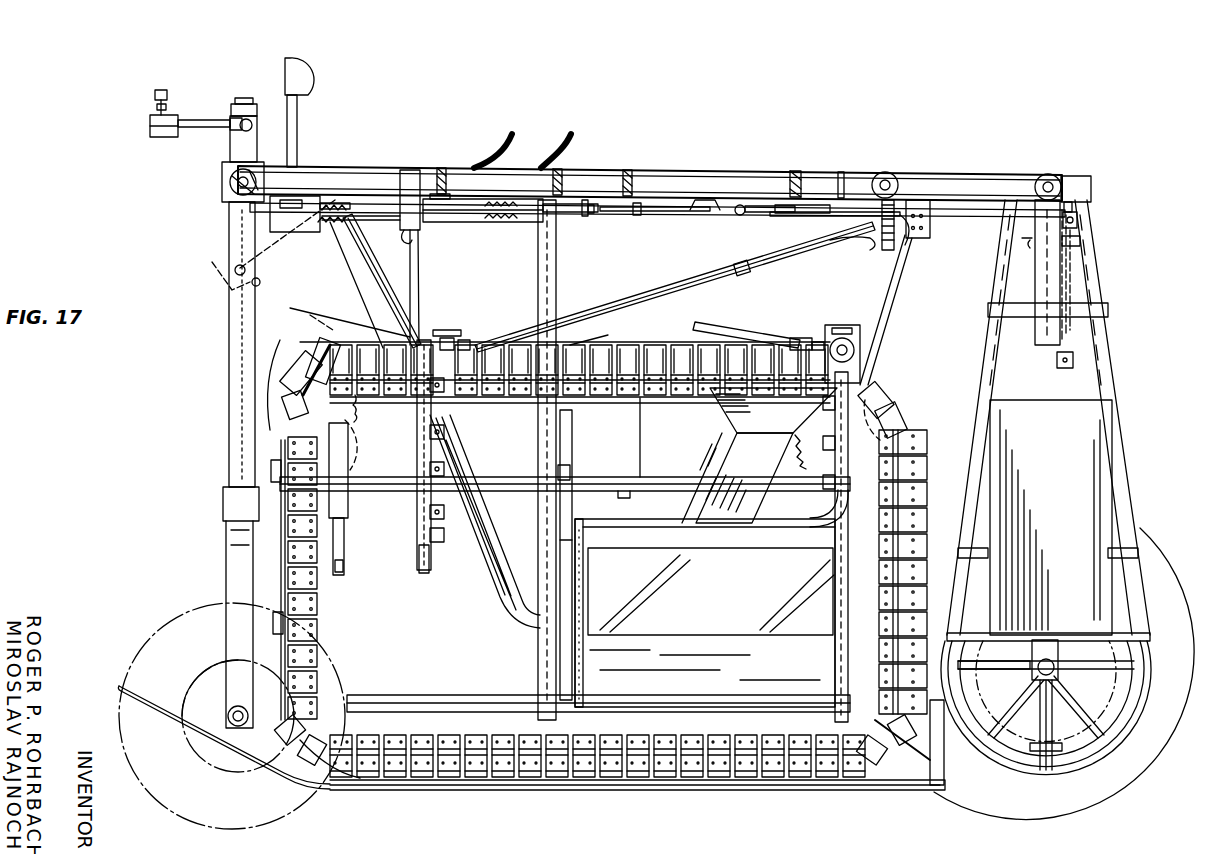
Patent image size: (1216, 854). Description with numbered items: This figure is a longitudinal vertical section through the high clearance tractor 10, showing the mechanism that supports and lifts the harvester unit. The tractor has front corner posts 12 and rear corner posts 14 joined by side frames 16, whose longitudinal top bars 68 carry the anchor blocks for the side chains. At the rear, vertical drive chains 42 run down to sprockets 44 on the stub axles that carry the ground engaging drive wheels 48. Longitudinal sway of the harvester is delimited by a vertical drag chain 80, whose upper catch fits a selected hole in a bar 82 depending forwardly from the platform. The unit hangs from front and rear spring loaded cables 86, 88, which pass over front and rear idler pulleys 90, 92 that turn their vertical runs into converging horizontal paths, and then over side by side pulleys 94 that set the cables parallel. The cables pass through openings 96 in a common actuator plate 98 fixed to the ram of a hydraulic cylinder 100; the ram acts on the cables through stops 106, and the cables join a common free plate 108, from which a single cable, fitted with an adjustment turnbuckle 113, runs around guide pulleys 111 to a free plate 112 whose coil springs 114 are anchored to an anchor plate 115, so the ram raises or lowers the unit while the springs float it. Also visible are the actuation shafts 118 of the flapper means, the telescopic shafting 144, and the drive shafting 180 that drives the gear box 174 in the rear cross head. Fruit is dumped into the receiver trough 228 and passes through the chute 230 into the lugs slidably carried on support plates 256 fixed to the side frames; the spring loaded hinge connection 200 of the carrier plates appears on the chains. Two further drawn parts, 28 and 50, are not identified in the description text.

The high clearance tractor 10 is at (210, 350).
The front corner posts 12 is at (236, 428).
The rear corner posts 14 is at (1070, 352).
The side frames 16 is at (858, 176).
The front wheel 28 is at (198, 716).
The vertical drive chains 42 is at (1097, 280).
The sprockets 44 is at (975, 640).
The ground engaging drive wheels 48 is at (1185, 703).
The conveyor 50 is at (466, 325).
The longitudinal top bars 68 is at (490, 482).
The vertical drag chain 80 is at (340, 332).
The bar 82 is at (225, 255).
The front spring loaded cable 86 is at (430, 312).
The rear spring loaded cable 88 is at (905, 318).
The front idler pulley 90 is at (407, 234).
The rear idler pulley 92 is at (905, 240).
The side by side pulleys 94 is at (290, 200).
The openings 96 is at (582, 216).
The common actuator plate 98 is at (590, 216).
The hydraulic cylinder 100 is at (475, 222).
The stops 106 is at (640, 205).
The common free plate 108 is at (735, 205).
The guide pulleys 111 is at (1070, 208).
The free plate 112 is at (540, 200).
The adjustment turnbuckle 113 is at (800, 205).
The coil springs 114 is at (338, 224).
The anchor plate 115 is at (322, 208).
The excitation or actuation shafts 118 is at (410, 445).
The shafting 144 is at (605, 312).
The gear box 174 is at (828, 340).
The drive shafting 180 is at (712, 330).
The internally spring loaded hinge connection 200 is at (490, 775).
The receiver trough 228 is at (790, 432).
The chute 230 is at (726, 460).
The support plates 256 is at (572, 665).